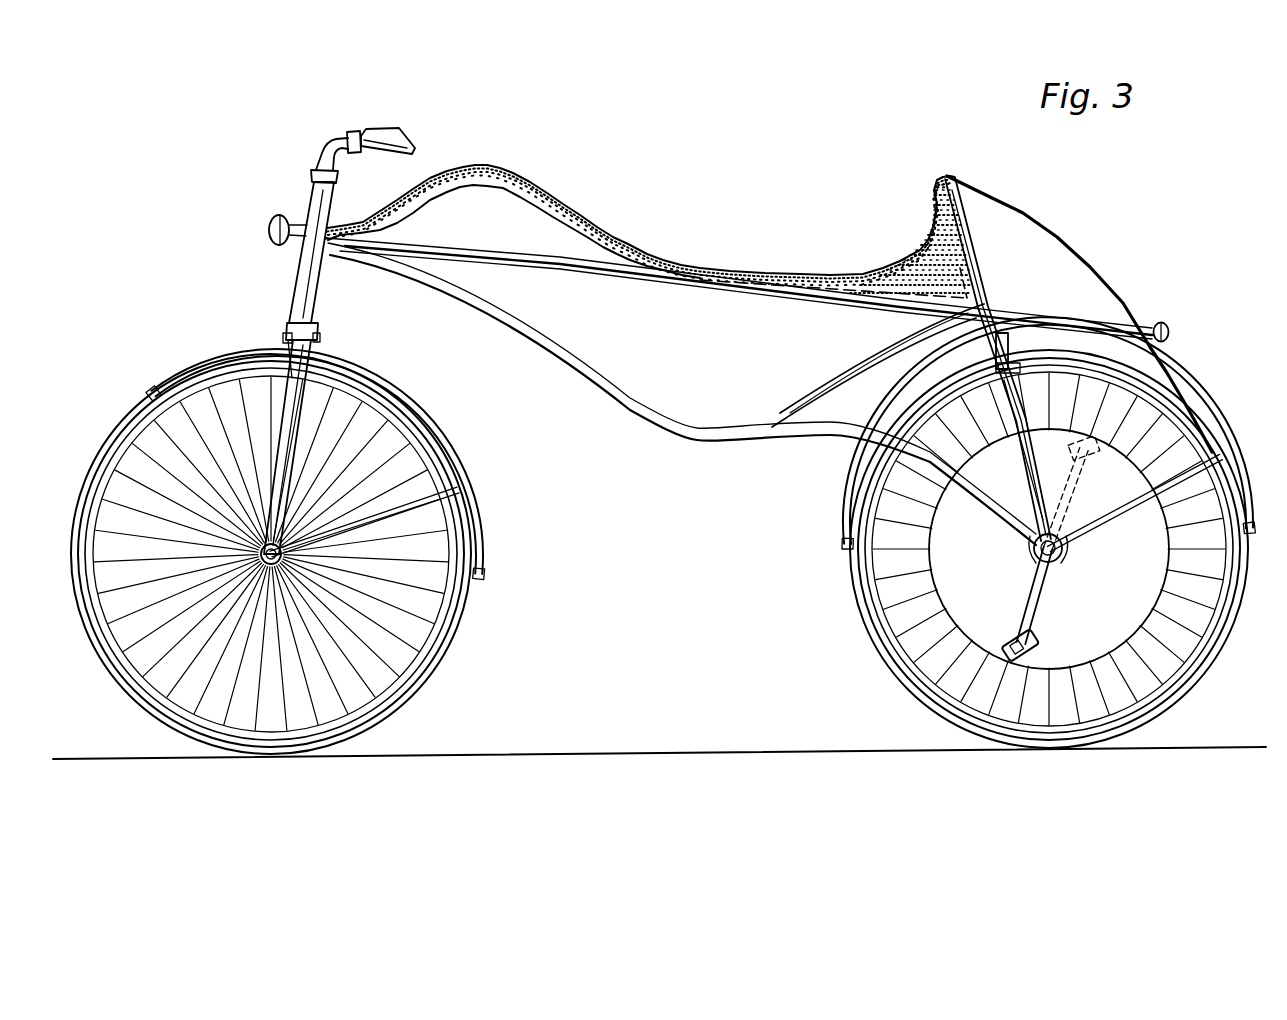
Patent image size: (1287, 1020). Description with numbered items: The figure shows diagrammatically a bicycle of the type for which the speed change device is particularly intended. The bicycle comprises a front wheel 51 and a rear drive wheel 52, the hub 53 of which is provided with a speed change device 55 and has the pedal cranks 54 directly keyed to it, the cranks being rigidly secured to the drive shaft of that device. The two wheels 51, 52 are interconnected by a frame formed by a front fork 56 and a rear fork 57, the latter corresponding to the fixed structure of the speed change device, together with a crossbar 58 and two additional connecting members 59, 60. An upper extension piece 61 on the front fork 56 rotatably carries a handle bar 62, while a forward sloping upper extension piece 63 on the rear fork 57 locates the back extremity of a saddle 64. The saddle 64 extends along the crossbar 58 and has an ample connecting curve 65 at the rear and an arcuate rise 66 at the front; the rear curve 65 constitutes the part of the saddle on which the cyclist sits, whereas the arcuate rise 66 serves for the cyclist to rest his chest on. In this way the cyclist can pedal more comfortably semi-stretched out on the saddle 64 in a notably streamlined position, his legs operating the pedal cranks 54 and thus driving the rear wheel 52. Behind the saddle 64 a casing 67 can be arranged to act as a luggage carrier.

The front wheel 51 is at (434, 644).
The rear drive wheel 52 is at (888, 653).
The hub 53 is at (1034, 549).
The pedal cranks 54 is at (1049, 581).
The speed change device 55 is at (957, 580).
The front fork 56 is at (305, 288).
The rear fork 57 is at (1010, 417).
The crossbar 58 is at (581, 266).
The connecting member 59 is at (576, 366).
The connecting member 60 is at (833, 380).
The upper extension piece 61 is at (312, 200).
The handle bar 62 is at (338, 149).
The forward sloping upper extension piece 63 is at (966, 232).
The saddle 64 is at (712, 259).
The connecting curve 65 is at (923, 248).
The arcuate rise 66 is at (538, 181).
The casing 67 is at (1057, 268).